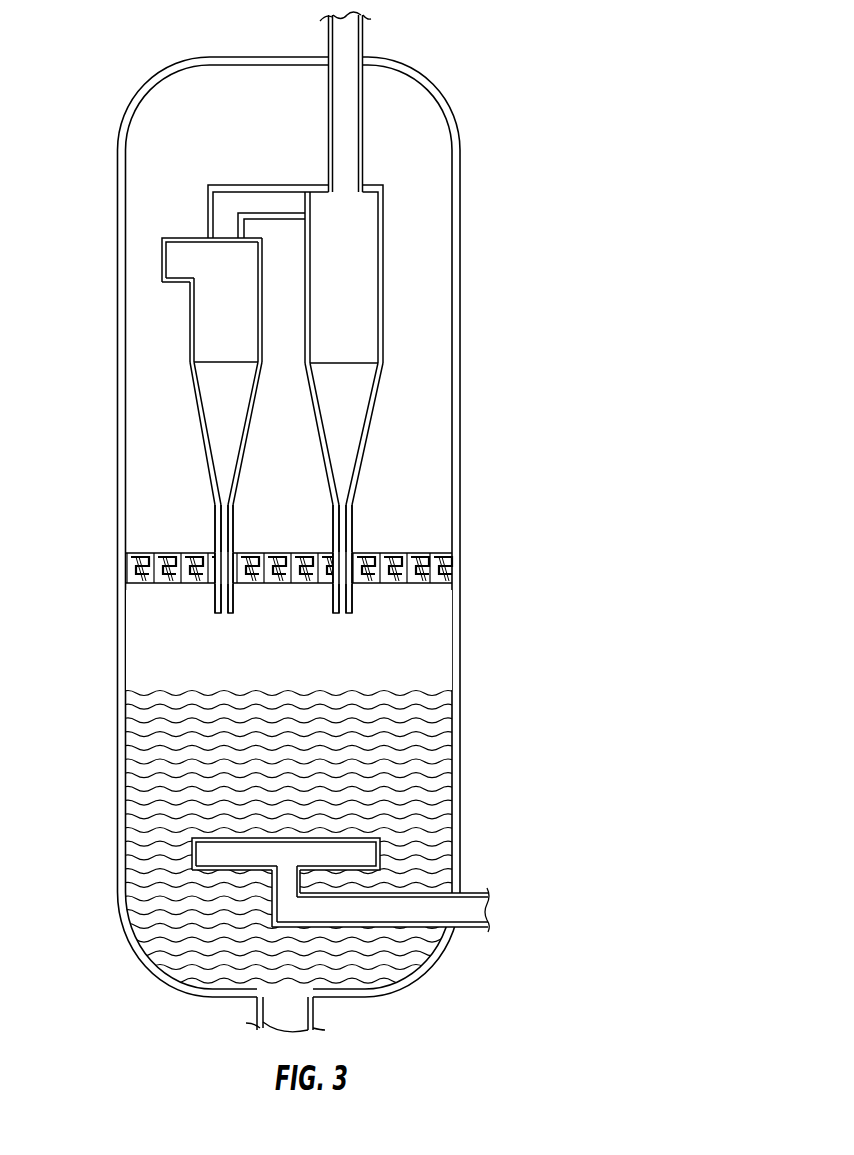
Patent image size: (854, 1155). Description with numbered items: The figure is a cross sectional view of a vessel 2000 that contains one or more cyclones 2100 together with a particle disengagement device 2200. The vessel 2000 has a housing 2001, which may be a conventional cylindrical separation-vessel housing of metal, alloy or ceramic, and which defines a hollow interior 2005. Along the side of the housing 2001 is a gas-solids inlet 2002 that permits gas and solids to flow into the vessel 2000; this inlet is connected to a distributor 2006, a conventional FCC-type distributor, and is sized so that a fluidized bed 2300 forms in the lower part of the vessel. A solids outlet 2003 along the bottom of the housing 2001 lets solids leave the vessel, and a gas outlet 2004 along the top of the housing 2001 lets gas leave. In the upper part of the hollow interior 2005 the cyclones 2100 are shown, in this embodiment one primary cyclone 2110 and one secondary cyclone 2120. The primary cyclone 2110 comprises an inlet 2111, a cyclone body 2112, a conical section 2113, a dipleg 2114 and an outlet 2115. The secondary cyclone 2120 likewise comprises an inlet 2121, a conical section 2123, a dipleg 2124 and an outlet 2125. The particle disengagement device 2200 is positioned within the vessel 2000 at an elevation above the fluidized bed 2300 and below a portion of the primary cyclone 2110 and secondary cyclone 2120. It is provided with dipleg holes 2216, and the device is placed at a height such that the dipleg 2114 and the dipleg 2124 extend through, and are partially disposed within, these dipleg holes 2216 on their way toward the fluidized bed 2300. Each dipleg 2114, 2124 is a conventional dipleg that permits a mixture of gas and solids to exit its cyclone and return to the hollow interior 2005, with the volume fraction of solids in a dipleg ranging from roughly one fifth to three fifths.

The vessel 2000 is at (287, 527).
The housing 2001 is at (117, 617).
The gas-solids inlet 2002 is at (472, 891).
The solids outlet 2003 is at (313, 1002).
The gas outlet 2004 is at (365, 43).
The hollow interior 2005 is at (432, 653).
The distributor 2006 is at (360, 838).
The one or more cyclones 2100 is at (298, 368).
The primary cyclone 2110 is at (181, 417).
The inlet 2111 is at (160, 260).
The cyclone body 2112 is at (263, 323).
The conical section 2113 is at (243, 464).
The dipleg 2114 is at (236, 532).
The outlet 2115 is at (218, 238).
The secondary cyclone 2120 is at (322, 368).
The inlet 2121 is at (268, 185).
The conical section 2123 is at (362, 464).
The dipleg 2124 is at (380, 559).
The outlet 2125 is at (338, 180).
The particle disengagement device 2200 is at (327, 595).
The dipleg hole 2216 is at (203, 583).
The fluidized bed 2300 is at (433, 728).